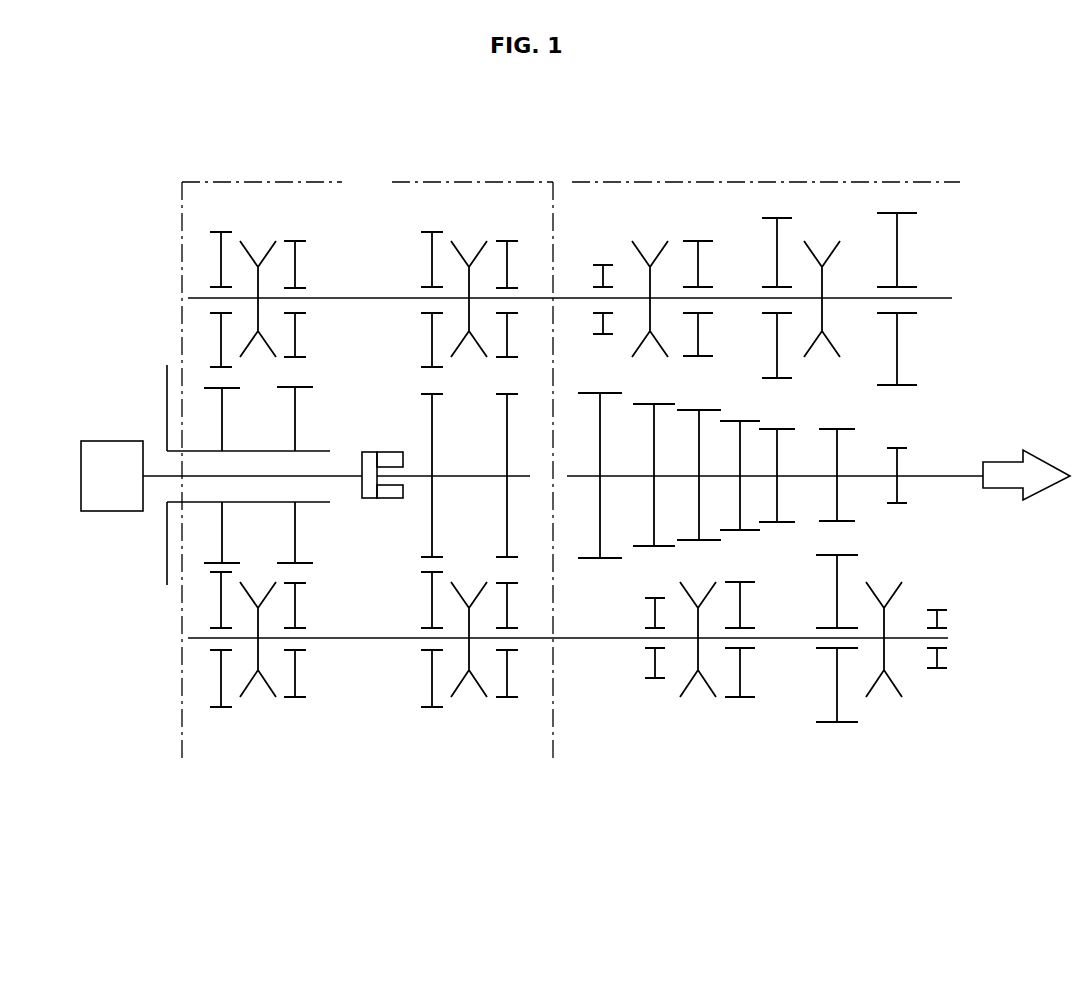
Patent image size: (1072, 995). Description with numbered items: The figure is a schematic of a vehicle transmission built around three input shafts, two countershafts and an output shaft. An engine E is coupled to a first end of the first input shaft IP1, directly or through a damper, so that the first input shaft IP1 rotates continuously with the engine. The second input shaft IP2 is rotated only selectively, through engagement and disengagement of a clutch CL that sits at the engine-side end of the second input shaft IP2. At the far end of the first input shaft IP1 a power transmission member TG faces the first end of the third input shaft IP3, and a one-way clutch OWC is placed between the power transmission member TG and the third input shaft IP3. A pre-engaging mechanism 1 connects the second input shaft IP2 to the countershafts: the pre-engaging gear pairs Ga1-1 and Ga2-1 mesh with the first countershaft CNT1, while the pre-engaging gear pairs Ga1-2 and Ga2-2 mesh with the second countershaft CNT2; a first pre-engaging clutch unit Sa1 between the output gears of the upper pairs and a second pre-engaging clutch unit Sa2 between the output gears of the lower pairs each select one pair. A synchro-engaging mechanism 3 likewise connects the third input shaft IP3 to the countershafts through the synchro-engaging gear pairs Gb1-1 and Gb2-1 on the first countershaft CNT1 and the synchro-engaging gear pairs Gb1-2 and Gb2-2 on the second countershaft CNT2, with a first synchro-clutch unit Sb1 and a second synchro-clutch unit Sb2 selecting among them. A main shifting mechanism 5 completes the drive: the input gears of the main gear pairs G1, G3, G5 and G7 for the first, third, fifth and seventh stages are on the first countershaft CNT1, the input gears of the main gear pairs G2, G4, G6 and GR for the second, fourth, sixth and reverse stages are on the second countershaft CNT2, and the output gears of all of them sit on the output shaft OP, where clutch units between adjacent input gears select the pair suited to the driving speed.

The pre-engaging mechanism 1 is at (233, 782).
The synchro-engaging mechanism 3 is at (443, 782).
The main shifting mechanism 5 is at (618, 782).
The engine E is at (112, 476).
The clutch CL is at (153, 398).
The power transmission member TG is at (360, 458).
The one-way clutch OWC is at (388, 452).
The first input shaft IP1 is at (248, 476).
The second input shaft IP2 is at (265, 503).
The third input shaft IP3 is at (472, 476).
The output shaft OP is at (932, 476).
The first countershaft CNT1 is at (943, 298).
The second countershaft CNT2 is at (948, 638).
The first pre-engaging clutch unit Sa1 is at (257, 228).
The first synchro-clutch unit Sb1 is at (468, 228).
The second pre-engaging clutch unit Sa2 is at (258, 715).
The second synchro-clutch unit Sb2 is at (469, 715).
The 1-1 pre-engaging gear pair Ga1-1 is at (213, 286).
The 2-1 pre-engaging gear pair Ga2-1 is at (290, 281).
The 1-1 synchro-engaging gear pair Gb1-1 is at (424, 286).
The 2-1 synchro-engaging gear pair Gb2-1 is at (514, 281).
The 1-2 pre-engaging gear pair Ga1-2 is at (215, 656).
The 2-2 pre-engaging gear pair Ga2-2 is at (293, 662).
The 1-2 synchro-engaging gear pair Gb1-2 is at (424, 656).
The 2-2 synchro-engaging gear pair Gb2-2 is at (514, 662).
The main gear pair for the first gear stage G1 is at (604, 288).
The main gear pair for the second gear stage G2 is at (655, 650).
The main gear pair for the third gear stage G3 is at (698, 289).
The main gear pair for the fourth gear stage G4 is at (740, 653).
The main gear pair for the fifth gear stage G5 is at (777, 288).
The main gear pair for the sixth gear stage G6 is at (837, 650).
The main gear pair for the seventh gear stage G7 is at (897, 288).
The main gear pair for the reverse gear stage GR is at (937, 651).